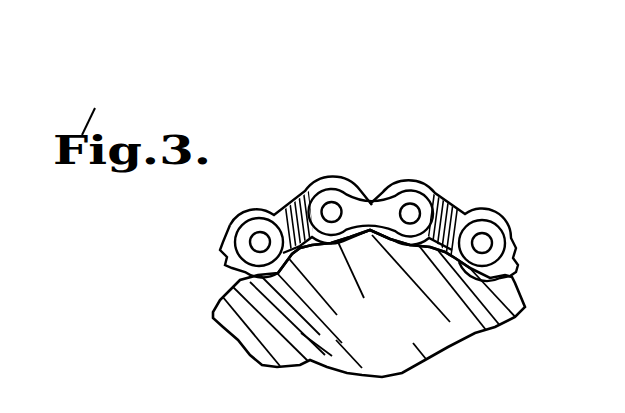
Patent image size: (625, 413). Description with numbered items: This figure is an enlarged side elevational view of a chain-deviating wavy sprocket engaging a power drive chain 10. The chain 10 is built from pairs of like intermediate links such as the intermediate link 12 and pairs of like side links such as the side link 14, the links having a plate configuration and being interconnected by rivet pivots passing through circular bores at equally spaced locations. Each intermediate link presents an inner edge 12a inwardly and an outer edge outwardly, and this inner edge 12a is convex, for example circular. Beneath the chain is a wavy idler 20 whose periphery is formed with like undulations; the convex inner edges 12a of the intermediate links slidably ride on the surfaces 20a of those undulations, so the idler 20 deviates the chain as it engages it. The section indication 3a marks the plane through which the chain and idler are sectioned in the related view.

The power drive chain 10 is at (214, 236).
The intermediate link 12 is at (421, 188).
The intermediate link inner edge 12a is at (277, 272).
The side link 14 is at (372, 212).
The wavy idler 20 is at (473, 315).
The undulation surface 20a is at (281, 262).
The section line 3a- 3a is at (470, 137).